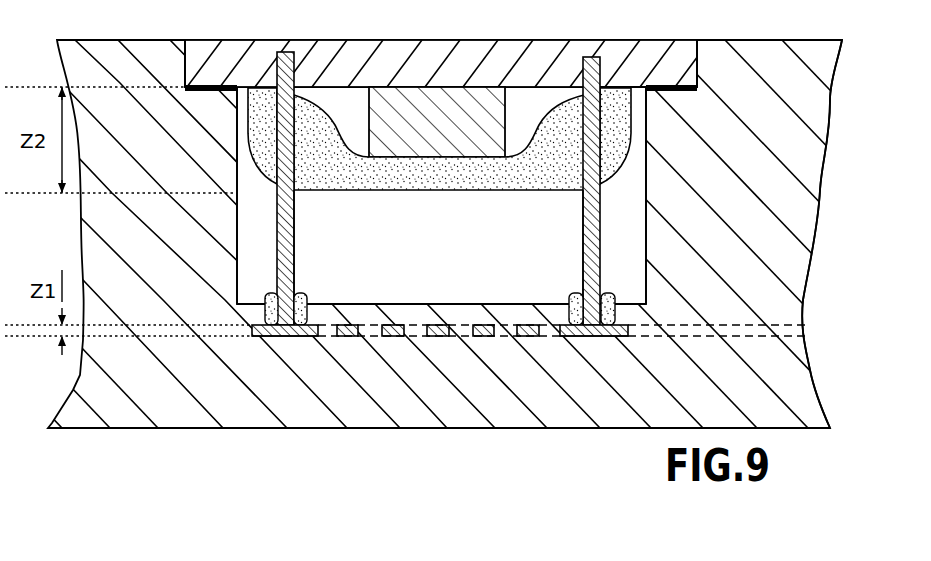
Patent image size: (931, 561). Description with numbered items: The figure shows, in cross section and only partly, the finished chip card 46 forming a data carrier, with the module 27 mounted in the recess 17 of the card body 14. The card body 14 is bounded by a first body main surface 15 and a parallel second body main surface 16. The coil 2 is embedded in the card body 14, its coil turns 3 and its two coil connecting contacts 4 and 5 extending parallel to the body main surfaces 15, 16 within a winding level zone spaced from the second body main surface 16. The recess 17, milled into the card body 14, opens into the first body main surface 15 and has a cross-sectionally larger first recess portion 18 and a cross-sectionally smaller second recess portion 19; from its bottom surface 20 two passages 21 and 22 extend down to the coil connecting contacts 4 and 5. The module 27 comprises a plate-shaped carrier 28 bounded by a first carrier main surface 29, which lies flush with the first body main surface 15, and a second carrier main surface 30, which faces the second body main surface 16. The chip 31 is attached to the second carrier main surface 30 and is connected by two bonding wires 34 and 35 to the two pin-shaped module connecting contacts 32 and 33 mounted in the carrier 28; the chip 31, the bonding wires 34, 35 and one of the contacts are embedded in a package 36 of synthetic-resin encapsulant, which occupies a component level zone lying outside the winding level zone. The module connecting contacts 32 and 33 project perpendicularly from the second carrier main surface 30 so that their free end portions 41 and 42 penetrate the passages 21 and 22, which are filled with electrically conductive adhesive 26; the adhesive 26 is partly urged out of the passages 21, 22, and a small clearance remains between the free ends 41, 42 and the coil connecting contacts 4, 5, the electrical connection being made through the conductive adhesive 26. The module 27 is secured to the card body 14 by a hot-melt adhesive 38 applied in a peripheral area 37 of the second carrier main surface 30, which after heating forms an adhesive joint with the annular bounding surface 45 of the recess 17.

The coil 2 is at (250, 338).
The coil turns 3 is at (345, 338).
The coil connecting contact 4 is at (306, 338).
The coil connecting contact 5 is at (630, 338).
The card body 14 is at (812, 203).
The first body main surface 15 is at (752, 42).
The second body main surface 16 is at (520, 428).
The recess 17 is at (646, 93).
The first recess portion 18 is at (697, 60).
The second recess portion 19 is at (648, 205).
The bottom surface 20 is at (406, 303).
The passage 21 is at (306, 297).
The passage 22 is at (572, 322).
The electrically conductive adhesive 26 is at (268, 296).
The module 27 is at (270, 203).
The carrier 28 is at (645, 70).
The first carrier main surface 29 is at (458, 42).
The second carrier main surface 30 is at (248, 88).
The chip 31 is at (408, 95).
The module connecting contact 32 is at (294, 218).
The module connecting contact 33 is at (583, 215).
The bonding wire 34 is at (372, 160).
The bonding wire 35 is at (528, 160).
The package 36 is at (404, 190).
The peripheral area 37 is at (200, 88).
The hot-melt adhesive 38 is at (214, 88).
The free end portion 41 is at (288, 338).
The free end portion 42 is at (592, 338).
The annular bounding surface 45 is at (196, 92).
The chip card 46 is at (252, 433).